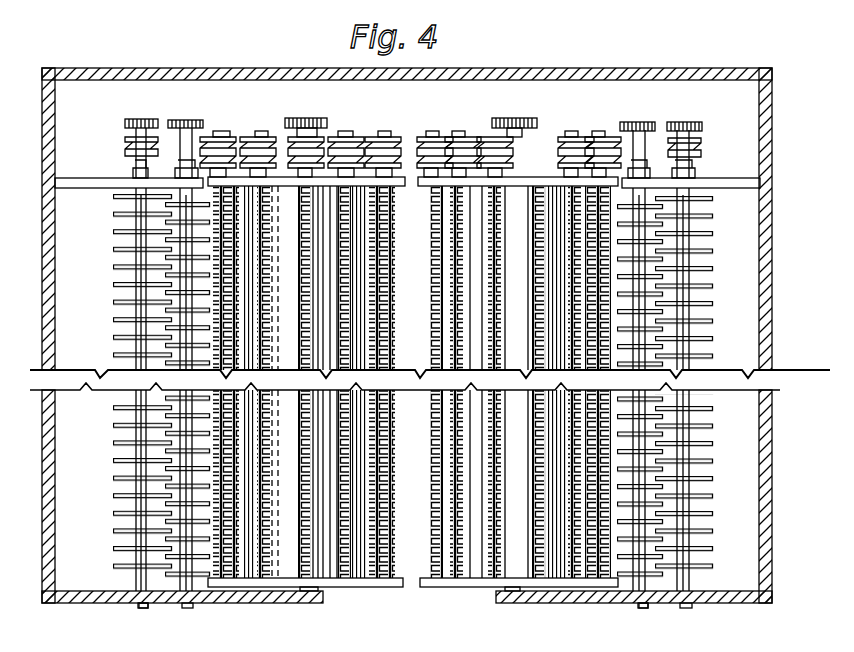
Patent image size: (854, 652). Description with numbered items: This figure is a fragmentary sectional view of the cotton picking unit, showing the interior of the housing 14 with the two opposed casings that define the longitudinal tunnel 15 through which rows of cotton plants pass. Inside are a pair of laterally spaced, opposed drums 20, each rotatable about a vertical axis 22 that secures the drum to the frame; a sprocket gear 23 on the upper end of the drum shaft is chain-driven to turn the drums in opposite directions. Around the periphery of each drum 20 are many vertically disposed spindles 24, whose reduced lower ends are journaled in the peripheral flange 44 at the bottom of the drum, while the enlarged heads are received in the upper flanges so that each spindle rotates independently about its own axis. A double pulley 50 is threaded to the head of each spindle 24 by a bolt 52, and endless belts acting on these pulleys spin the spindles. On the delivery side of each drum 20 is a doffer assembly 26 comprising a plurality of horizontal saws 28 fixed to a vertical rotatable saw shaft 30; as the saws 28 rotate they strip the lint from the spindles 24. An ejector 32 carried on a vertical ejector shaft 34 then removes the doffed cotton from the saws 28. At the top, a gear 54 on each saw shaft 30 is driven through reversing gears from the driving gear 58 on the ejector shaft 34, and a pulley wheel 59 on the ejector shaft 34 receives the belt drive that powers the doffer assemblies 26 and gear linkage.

The housing 14 is at (160, 68).
The longitudinal tunnel 15 is at (413, 573).
The drum 20 is at (284, 565).
The vertical axis 22 is at (308, 118).
The sprocket gear 23 is at (292, 118).
The spindle 24 is at (300, 470).
The doffer assembly 26 is at (712, 300).
The horizontal saw 28 is at (152, 311).
The saw shaft 30 is at (185, 353).
The ejector 32 is at (117, 238).
The ejector shaft 34 is at (137, 237).
The peripheral flange 44 is at (355, 588).
The double pulley 50 is at (385, 135).
The bolt 52 is at (262, 135).
The gear 54 is at (190, 120).
The driving gear 58 is at (130, 120).
The pulley wheel 59 is at (126, 146).